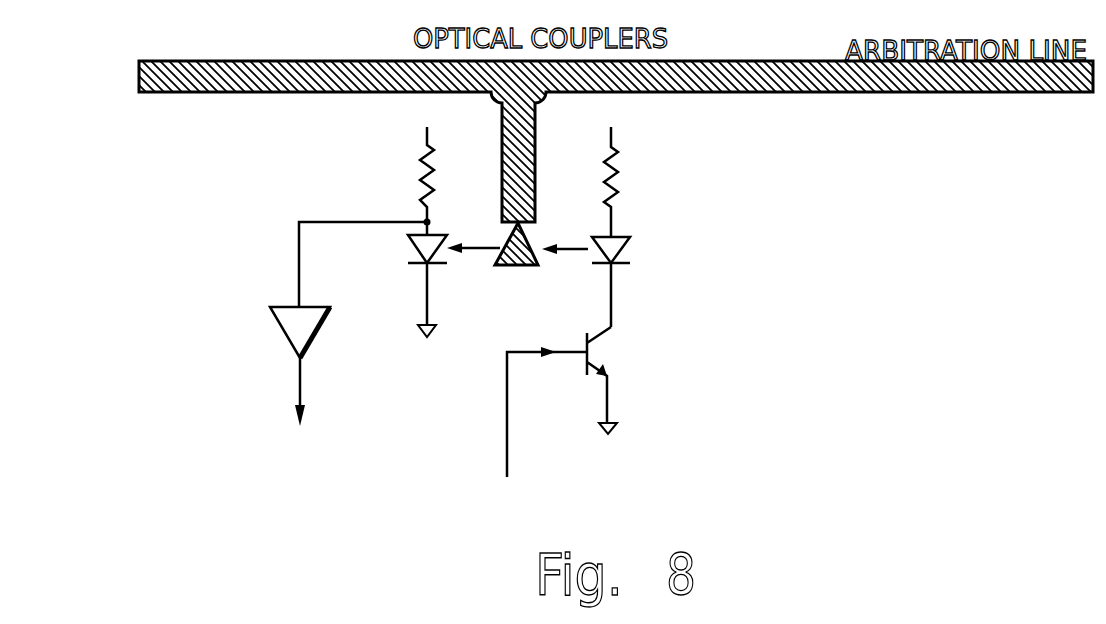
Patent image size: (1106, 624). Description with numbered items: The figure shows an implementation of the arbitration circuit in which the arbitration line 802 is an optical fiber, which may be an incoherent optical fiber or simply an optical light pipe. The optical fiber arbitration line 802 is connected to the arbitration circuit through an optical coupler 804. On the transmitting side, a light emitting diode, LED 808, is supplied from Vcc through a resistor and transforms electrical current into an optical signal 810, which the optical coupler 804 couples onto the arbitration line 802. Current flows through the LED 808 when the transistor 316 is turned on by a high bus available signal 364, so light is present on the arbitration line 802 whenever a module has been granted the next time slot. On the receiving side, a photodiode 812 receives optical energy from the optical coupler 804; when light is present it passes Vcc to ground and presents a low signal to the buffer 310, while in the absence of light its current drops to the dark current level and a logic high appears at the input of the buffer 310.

The arbitration line 802 is at (982, 95).
The optical coupler 804 is at (512, 268).
The LED 808 is at (622, 268).
The optical signal 810 is at (565, 253).
The photodiode 812 is at (411, 268).
The buffer 310 is at (285, 335).
The transistor 316 is at (617, 365).
The bus available signal 364 is at (507, 430).